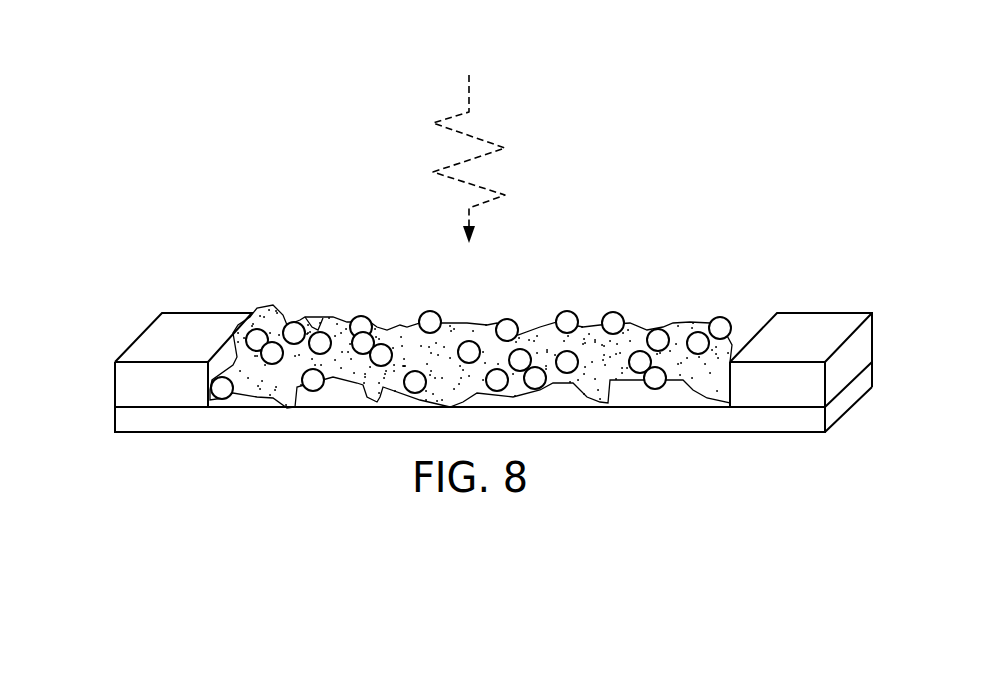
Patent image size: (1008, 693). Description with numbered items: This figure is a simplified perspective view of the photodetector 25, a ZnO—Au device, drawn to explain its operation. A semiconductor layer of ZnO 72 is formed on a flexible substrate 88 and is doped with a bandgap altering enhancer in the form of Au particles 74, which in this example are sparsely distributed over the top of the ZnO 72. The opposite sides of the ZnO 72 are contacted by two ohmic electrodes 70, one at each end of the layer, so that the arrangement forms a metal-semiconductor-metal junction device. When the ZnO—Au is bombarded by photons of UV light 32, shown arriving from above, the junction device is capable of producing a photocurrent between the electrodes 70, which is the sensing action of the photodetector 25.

The photodetector 25 is at (665, 92).
The UV light 32 is at (467, 99).
The ohmic electrodes 70 is at (205, 324).
The ZnO 72 is at (330, 320).
The Au particles 74 is at (430, 318).
The flexible substrate 88 is at (123, 421).